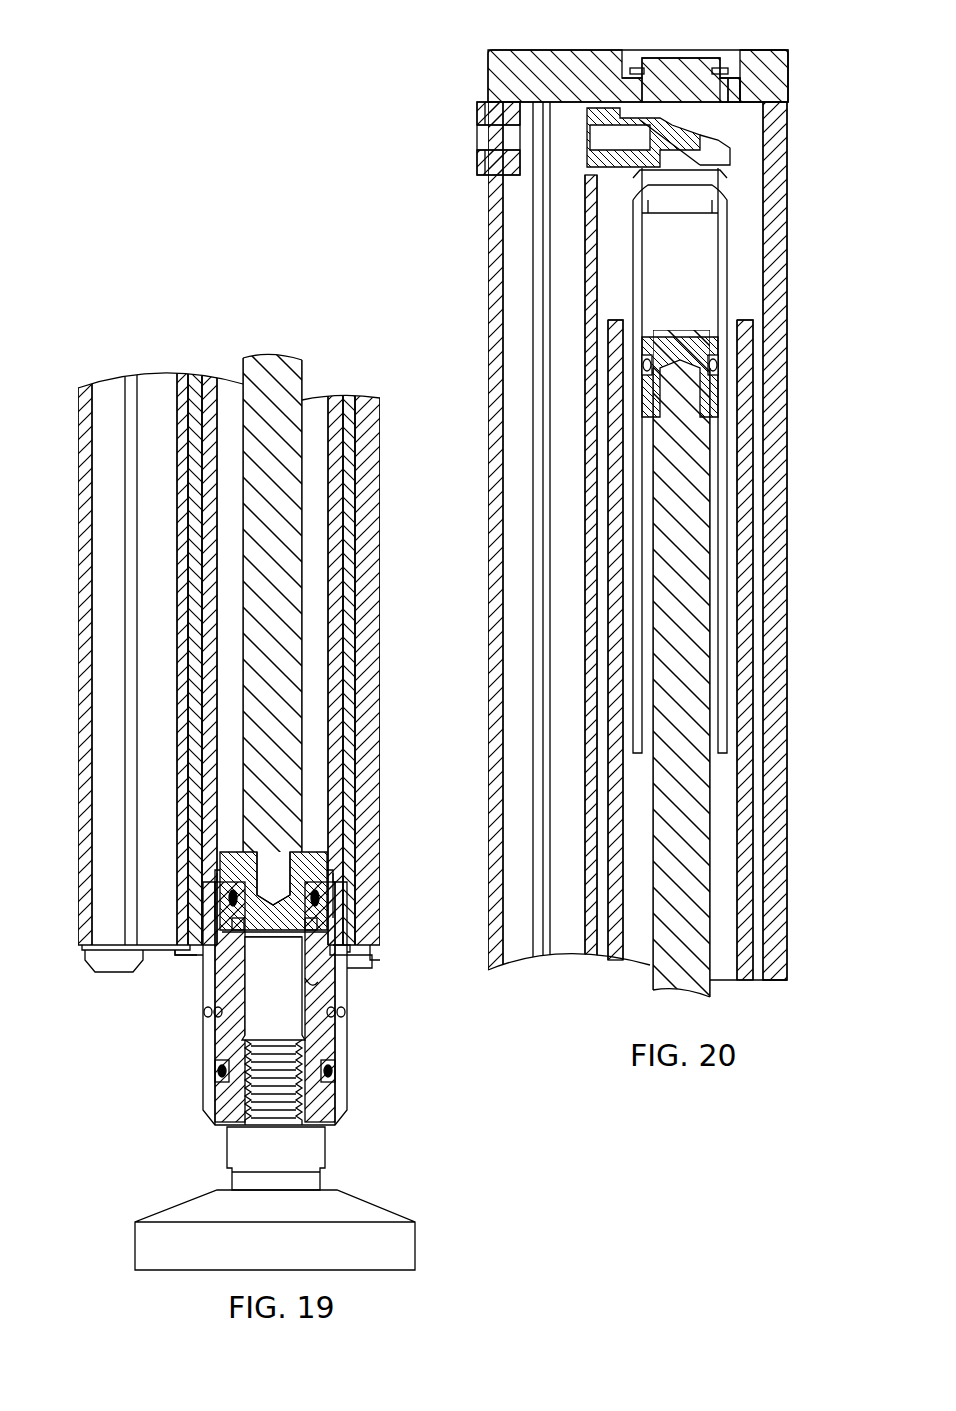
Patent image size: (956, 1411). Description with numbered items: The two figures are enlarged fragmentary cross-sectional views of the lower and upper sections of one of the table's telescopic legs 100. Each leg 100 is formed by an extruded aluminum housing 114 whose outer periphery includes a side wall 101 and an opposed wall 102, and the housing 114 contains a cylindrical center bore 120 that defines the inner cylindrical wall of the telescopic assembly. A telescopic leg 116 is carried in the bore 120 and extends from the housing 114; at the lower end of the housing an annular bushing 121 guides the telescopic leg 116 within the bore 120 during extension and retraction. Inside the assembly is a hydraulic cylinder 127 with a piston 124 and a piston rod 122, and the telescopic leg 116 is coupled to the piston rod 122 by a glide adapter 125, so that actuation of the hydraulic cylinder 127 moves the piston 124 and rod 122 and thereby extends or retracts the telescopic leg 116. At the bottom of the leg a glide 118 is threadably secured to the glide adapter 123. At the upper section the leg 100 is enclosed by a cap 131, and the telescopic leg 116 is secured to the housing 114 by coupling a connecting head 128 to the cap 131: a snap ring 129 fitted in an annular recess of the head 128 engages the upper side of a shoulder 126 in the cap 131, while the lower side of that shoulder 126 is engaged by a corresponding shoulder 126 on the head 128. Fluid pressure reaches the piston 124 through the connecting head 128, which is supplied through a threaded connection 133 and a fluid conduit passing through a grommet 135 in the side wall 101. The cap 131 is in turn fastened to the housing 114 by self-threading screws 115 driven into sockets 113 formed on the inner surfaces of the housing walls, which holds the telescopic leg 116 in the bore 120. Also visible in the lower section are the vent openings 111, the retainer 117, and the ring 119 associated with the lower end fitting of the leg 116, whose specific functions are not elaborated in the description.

In FIG. 19, the telescopic leg 100 is at (50, 498).
In FIG. 20, the telescopic leg 100 is at (435, 245).
In FIG. 19, the side wall 101 is at (78, 715).
In FIG. 20, the side wall 101 is at (488, 315).
In FIG. 19, the opposed wall 102 is at (380, 540).
In FIG. 20, the opposed wall 102 is at (770, 405).
In FIG. 19, the vent holes 111 is at (338, 1015).
In FIG. 19, the socket 113 is at (290, 845).
In FIG. 20, the housing 114 is at (795, 277).
In FIG. 19, the screw 115 is at (320, 895).
In FIG. 19, the telescopic leg 116 is at (198, 1038).
In FIG. 20, the telescopic leg 116 is at (745, 985).
In FIG. 19, the retainer 117 is at (325, 918).
In FIG. 19, the glide 118 is at (372, 1205).
In FIG. 19, the ring 119 is at (350, 948).
In FIG. 20, the cylindrical center bore 120 is at (753, 185).
In FIG. 19, the annular bushing 121 is at (197, 960).
In FIG. 19, the piston rod 122 is at (302, 722).
In FIG. 20, the piston rod 122 is at (653, 985).
In FIG. 19, the glide adapter 123 is at (325, 862).
In FIG. 20, the piston 124 is at (655, 337).
In FIG. 19, the glide adapter 125 is at (318, 985).
In FIG. 19, the shoulder 126 is at (335, 1072).
In FIG. 20, the shoulder 126 is at (740, 90).
In FIG. 20, the hydraulic cylinder 127 is at (718, 242).
In FIG. 20, the connecting head 128 is at (690, 60).
In FIG. 20, the snap ring 129 is at (636, 68).
In FIG. 20, the cap 131 is at (518, 50).
In FIG. 20, the threaded connection 133 is at (575, 108).
In FIG. 20, the grommet 135 is at (478, 108).